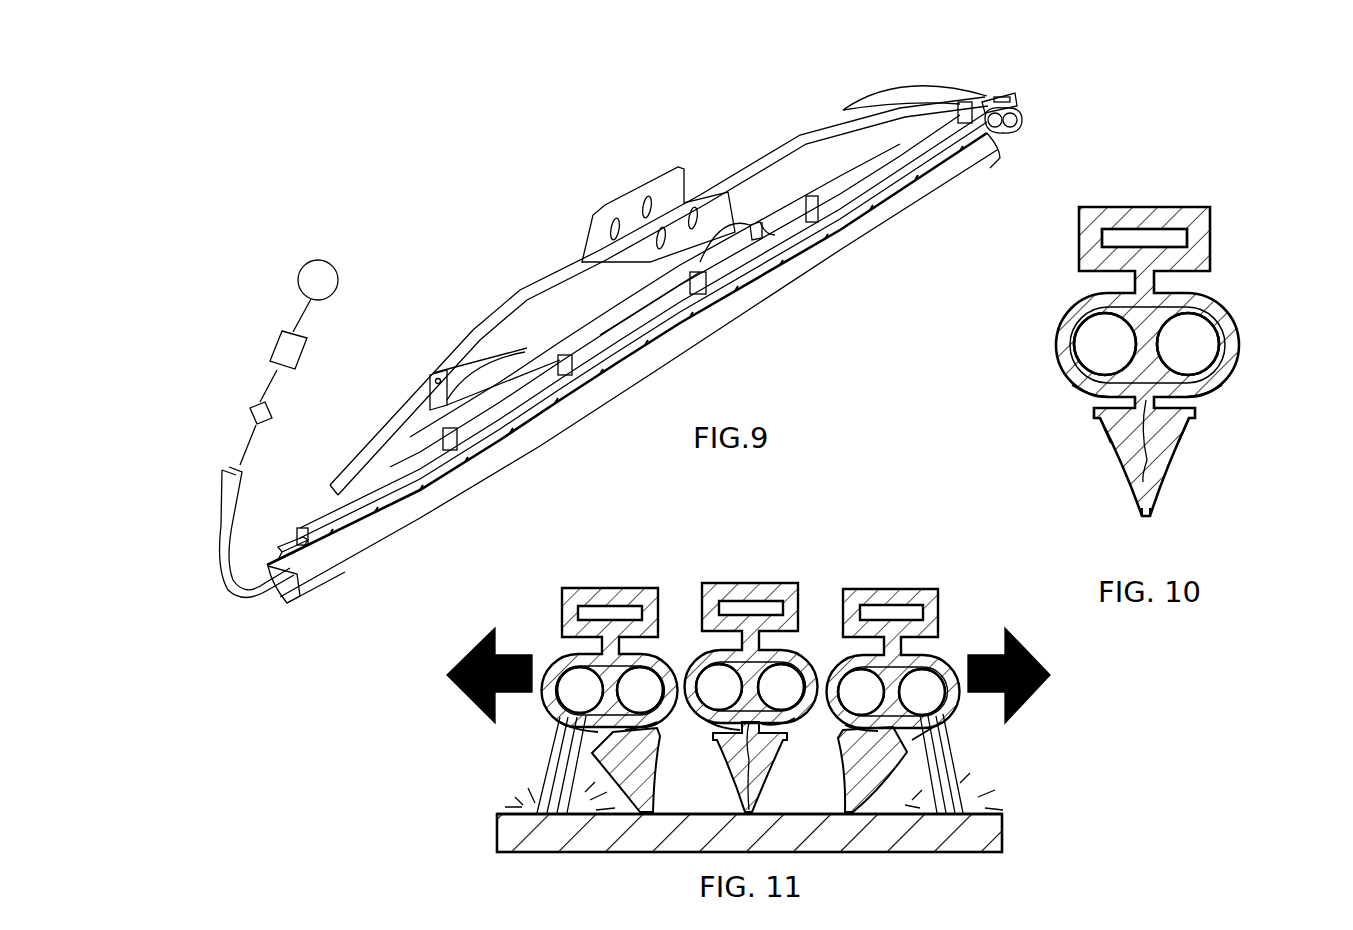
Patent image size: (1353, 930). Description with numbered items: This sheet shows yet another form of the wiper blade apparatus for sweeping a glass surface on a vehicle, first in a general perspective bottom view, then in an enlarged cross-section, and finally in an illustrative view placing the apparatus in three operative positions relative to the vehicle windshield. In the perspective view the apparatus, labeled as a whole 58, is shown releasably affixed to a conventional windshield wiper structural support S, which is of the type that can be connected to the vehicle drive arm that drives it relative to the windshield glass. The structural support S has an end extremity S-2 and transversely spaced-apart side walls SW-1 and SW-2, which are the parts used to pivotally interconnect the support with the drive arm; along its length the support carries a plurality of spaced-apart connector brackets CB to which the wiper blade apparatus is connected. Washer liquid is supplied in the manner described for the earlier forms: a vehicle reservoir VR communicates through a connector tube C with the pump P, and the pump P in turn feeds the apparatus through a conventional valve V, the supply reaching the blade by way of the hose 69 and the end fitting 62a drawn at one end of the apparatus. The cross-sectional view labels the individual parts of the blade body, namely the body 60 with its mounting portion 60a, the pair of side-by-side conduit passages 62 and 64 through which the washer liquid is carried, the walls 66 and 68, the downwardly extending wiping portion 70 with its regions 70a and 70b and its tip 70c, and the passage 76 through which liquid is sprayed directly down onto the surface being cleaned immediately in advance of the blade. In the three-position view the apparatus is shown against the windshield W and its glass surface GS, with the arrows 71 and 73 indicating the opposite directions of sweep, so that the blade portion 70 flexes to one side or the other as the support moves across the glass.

In FIG. 9, the spray nozzle bar assembly 58 is at (632, 354).
In FIG. 10, the spray nozzle bar assembly 58 is at (1148, 355).
In FIG. 9, the tubular body 60 is at (513, 423).
In FIG. 10, the tubular body 60 is at (1236, 326).
In FIG. 11, the tubular body 60 is at (751, 655).
In FIG. 10, the mounting rail 60a is at (1146, 207).
In FIG. 11, the mounting rail 60a is at (607, 588).
In FIG. 10, the first fluid channel 62 is at (1105, 345).
In FIG. 11, the first fluid channel 62 is at (580, 692).
In FIG. 9, the end connector 62a is at (280, 567).
In FIG. 10, the second fluid channel 64 is at (1188, 344).
In FIG. 11, the second fluid channel 64 is at (638, 690).
In FIG. 9, the first flexible wall 66 is at (350, 530).
In FIG. 10, the first flexible wall 66 is at (1083, 395).
In FIG. 11, the first flexible wall 66 is at (558, 727).
In FIG. 10, the second flexible wall 68 is at (1197, 397).
In FIG. 11, the second flexible wall 68 is at (658, 740).
In FIG. 9, the supply hose 69 is at (229, 478).
In FIG. 9, the wiping lip nozzle 70 is at (625, 382).
In FIG. 10, the wiping lip nozzle 70 is at (1148, 479).
In FIG. 11, the wiping lip nozzle 70 is at (750, 768).
In FIG. 10, the first lip shoulder 70a is at (1107, 419).
In FIG. 11, the first lip shoulder 70a is at (850, 740).
In FIG. 10, the second lip shoulder 70b is at (1191, 418).
In FIG. 11, the second lip shoulder 70b is at (602, 767).
In FIG. 10, the lip tip 70c is at (1152, 513).
In FIG. 11, the lip tip 70c is at (653, 807).
In FIG. 11, the first wiping direction 71 is at (465, 653).
In FIG. 11, the second wiping direction 73 is at (1032, 660).
In FIG. 10, the fluid passage 76 is at (1146, 464).
In FIG. 11, the fluid passage 76 is at (612, 738).
In FIG. 11, the windshield W is at (902, 852).
In FIG. 11, the glass surface GS is at (817, 812).
In FIG. 9, the structural support S is at (496, 300).
In FIG. 9, the second extremity S-2 is at (905, 88).
In FIG. 9, the side wall SW-1 is at (632, 205).
In FIG. 9, the side wall SW-2 is at (650, 258).
In FIG. 9, the connector brackets CB is at (299, 528).
In FIG. 9, the vehicle reservoir VR is at (338, 283).
In FIG. 9, the connector tube C is at (302, 318).
In FIG. 9, the pump P is at (290, 348).
In FIG. 9, the valve V is at (250, 413).